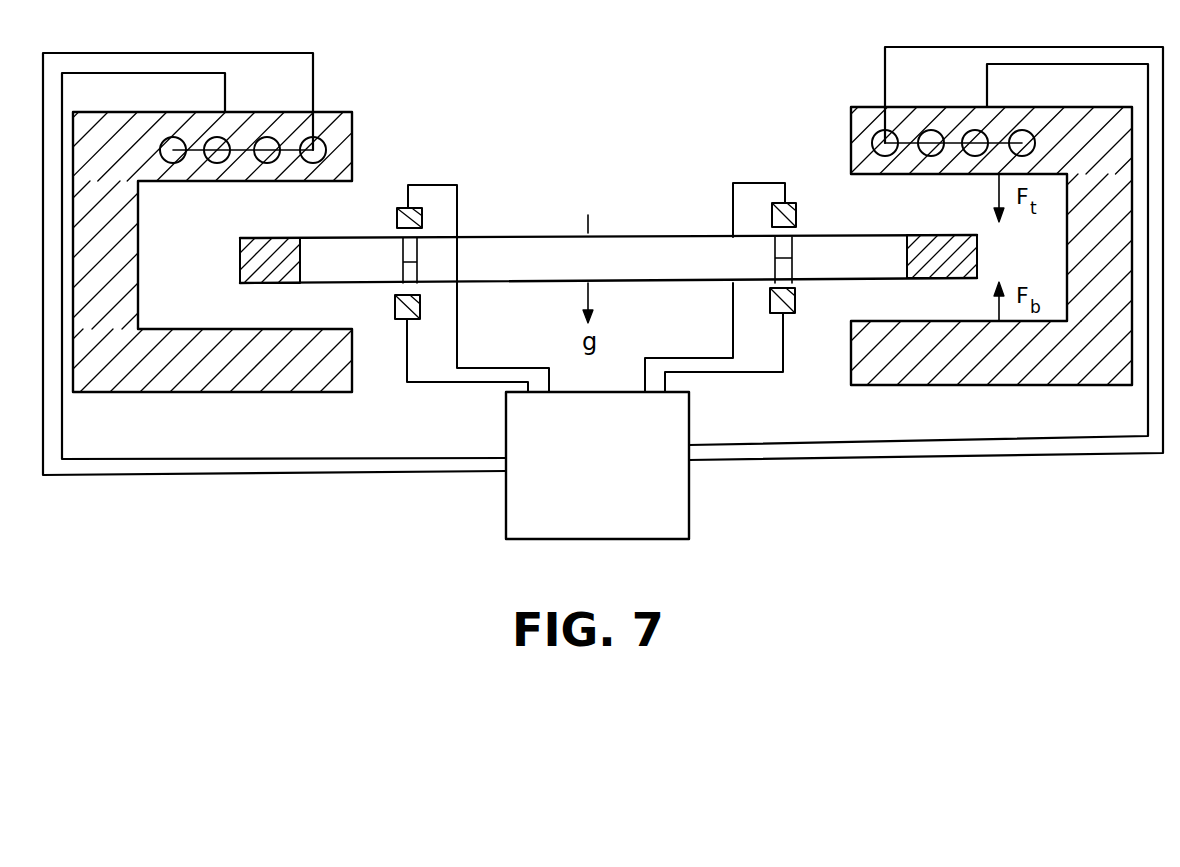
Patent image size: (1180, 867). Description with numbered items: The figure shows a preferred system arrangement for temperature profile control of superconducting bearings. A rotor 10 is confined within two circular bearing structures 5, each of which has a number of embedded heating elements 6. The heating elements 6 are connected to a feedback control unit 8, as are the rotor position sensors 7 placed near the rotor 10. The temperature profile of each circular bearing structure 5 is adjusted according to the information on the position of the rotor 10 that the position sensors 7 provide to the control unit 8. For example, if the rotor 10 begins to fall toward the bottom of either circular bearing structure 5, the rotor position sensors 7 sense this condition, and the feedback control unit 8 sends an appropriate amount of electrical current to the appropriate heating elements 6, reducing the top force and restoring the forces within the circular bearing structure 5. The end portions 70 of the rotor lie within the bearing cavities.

The circular bearing structure 5 is at (190, 392).
The heating elements 6 is at (176, 137).
The rotor position sensors 7 is at (398, 208).
The feedback control unit 8 is at (689, 500).
The rotor 10 is at (644, 237).
The armature end block 70 is at (242, 260).